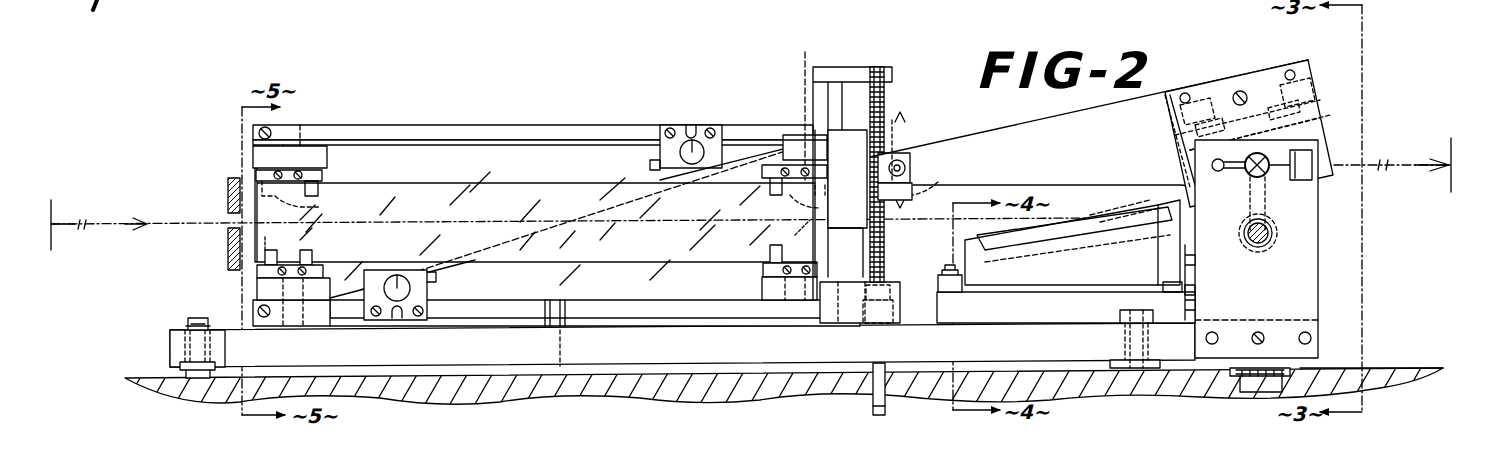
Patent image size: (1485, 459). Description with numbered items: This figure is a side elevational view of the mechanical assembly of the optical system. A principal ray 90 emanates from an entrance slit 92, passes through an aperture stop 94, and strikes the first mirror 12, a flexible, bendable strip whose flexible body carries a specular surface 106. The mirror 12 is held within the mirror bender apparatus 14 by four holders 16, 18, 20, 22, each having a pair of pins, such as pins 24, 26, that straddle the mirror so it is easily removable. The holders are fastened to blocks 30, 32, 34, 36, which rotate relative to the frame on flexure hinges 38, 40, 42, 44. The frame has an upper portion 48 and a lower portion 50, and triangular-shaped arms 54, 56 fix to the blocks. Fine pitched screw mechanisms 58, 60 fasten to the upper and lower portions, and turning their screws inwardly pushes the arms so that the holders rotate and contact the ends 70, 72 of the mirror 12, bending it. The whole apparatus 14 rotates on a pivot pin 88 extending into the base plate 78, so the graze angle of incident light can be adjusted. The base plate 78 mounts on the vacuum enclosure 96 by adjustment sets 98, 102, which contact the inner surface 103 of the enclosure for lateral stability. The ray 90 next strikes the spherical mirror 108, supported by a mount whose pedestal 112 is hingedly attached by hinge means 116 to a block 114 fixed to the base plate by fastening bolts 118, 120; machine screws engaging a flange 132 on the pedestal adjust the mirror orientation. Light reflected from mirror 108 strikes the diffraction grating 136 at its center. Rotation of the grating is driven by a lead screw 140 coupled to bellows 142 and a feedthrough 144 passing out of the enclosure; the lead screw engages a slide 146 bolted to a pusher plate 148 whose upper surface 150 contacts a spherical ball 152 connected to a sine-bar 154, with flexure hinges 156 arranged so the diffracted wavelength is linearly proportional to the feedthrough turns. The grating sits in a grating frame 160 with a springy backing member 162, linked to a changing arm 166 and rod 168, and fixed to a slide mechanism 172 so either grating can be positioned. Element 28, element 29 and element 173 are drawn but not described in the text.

The first mirror 12 is at (495, 168).
The mirror bender apparatus 14 is at (590, 124).
The holder 16 is at (324, 175).
The holder 18 is at (255, 272).
The holder 20 is at (752, 163).
The holder 22 is at (760, 270).
The pair of pins 24 is at (314, 190).
The pair of pins 26 is at (270, 236).
The stop pin 28 is at (815, 212).
The support pin 29 is at (771, 250).
The block 30 is at (318, 152).
The block 32 is at (258, 298).
The block 34 is at (794, 148).
The block 36 is at (775, 310).
The flexure hinge 38 is at (302, 135).
The flexure hinge 40 is at (286, 326).
The flexure hinge 42 is at (804, 110).
The flexure hinge 44 is at (812, 318).
The upper portion 48 is at (632, 126).
The lower portion 50 is at (680, 312).
The triangular-shaped arm 54 is at (493, 296).
The triangular-shaped arm 56 is at (445, 144).
The fine pitched screw mechanism 58 is at (388, 320).
The fine pitched screw mechanism 60 is at (702, 126).
The end of mirror 70 is at (227, 247).
The end of mirror 72 is at (843, 180).
The base plate 78 is at (173, 344).
The pivot pin 88 is at (566, 344).
The principal ray 90 is at (1158, 212).
The entrance slit 92 is at (55, 212).
The aperture stop 94 is at (227, 196).
The vacuum enclosure 96 is at (134, 378).
The adjustment set 98 is at (186, 322).
The adjustment set 102 is at (1118, 338).
The inner surface 103 is at (1398, 368).
The specular surface 106 is at (538, 195).
The spherical mirror 108 is at (1135, 200).
The pedestal 112 is at (1183, 254).
The block 114 is at (1055, 297).
The hinge means 116 is at (1192, 292).
The fastening bolts 118 is at (953, 292).
The fastening bolts 120 is at (1165, 285).
The flange 132 is at (948, 278).
The diffraction grating 136 is at (1300, 172).
The lead screw 140 is at (880, 90).
The bellows or gearing 142 is at (895, 340).
The feedthrough 144 is at (888, 405).
The slide 146 is at (905, 120).
The pusher plate 148 is at (925, 190).
The upper surface 150 is at (918, 172).
The spherical ball 152 is at (906, 150).
The sine-bar 154 is at (1078, 120).
The flexure hinge 156 is at (1320, 138).
The grating frame 160 is at (1170, 140).
The springy backing member 162 is at (1312, 120).
The changing arm 166 is at (1267, 210).
The rod 168 is at (1275, 236).
The slide mechanism 172 is at (1237, 82).
The foot 173 is at (1276, 368).